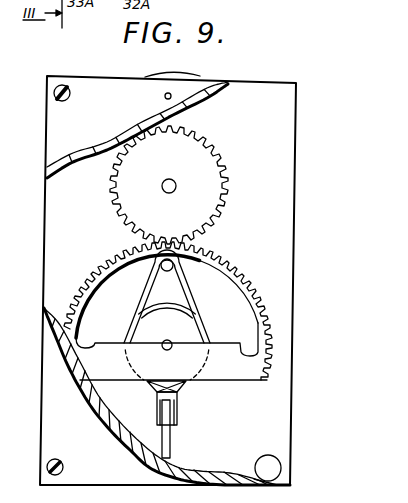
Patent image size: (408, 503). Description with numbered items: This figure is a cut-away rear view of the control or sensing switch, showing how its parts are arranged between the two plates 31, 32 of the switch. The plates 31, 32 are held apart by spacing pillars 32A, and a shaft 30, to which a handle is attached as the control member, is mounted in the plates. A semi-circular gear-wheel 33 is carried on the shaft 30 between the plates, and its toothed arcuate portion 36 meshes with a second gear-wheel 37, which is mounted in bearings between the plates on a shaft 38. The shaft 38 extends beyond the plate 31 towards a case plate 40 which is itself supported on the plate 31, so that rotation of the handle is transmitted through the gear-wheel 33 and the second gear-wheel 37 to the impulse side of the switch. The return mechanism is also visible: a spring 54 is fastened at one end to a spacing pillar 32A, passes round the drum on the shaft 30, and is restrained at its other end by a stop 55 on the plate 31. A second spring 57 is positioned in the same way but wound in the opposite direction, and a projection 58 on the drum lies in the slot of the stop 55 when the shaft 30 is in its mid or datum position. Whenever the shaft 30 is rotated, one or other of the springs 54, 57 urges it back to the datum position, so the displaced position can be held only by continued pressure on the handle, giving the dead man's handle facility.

The shaft 30 is at (168, 350).
The plate 31 is at (260, 230).
The plate 32 is at (133, 90).
The pillar 32A is at (258, 458).
The semi-circular gear-wheel 33 is at (101, 355).
The arcuate portion 36 is at (222, 257).
The second gear-wheel 37 is at (202, 160).
The shaft 38 is at (173, 183).
The case plate 40 is at (182, 73).
The spring 54 is at (147, 297).
The stop 55 is at (170, 442).
The second spring 57 is at (188, 293).
The projection 58 is at (180, 393).